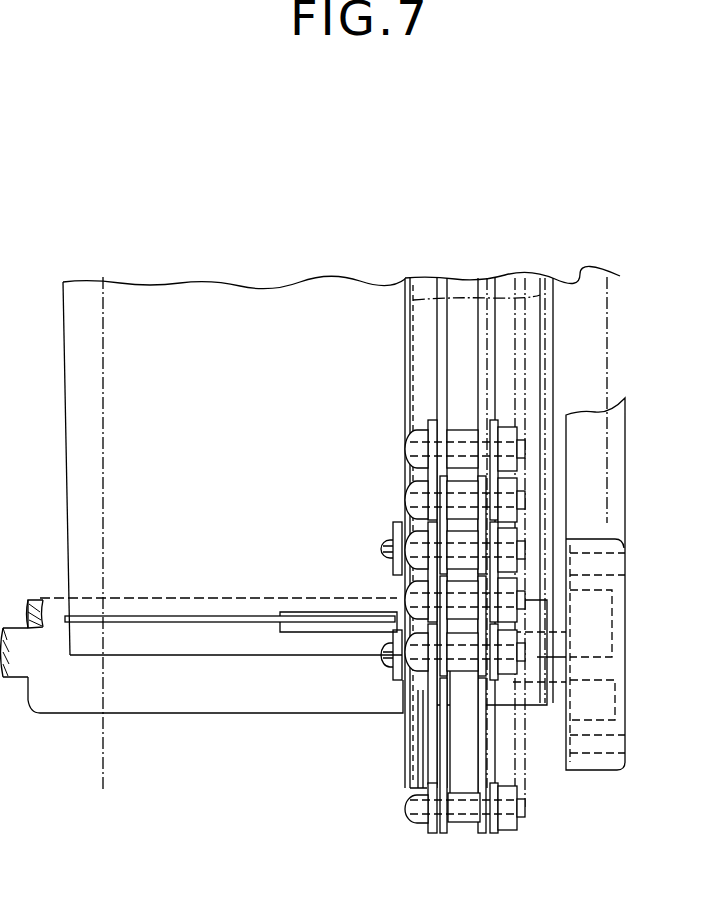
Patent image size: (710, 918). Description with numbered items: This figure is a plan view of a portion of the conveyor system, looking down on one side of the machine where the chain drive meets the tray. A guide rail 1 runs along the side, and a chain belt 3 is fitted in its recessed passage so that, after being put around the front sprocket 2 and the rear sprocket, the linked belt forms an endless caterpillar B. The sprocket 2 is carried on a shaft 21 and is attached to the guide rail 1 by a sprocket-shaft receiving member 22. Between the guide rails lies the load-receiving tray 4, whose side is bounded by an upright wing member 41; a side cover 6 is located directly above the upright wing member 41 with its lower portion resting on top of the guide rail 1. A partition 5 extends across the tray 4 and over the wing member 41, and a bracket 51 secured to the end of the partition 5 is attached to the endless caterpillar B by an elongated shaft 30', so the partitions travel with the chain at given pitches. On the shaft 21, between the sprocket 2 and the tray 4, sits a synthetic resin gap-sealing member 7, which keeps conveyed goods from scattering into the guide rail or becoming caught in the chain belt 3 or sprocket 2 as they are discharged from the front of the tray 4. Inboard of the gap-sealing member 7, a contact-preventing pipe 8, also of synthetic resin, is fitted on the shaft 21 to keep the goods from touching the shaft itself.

The guide rail 1 is at (553, 320).
The sprocket 2 is at (465, 768).
The chain belt 3 is at (455, 437).
The load-receiving tray 4 is at (83, 537).
The partition 5 is at (213, 625).
The side cover 6 is at (523, 297).
The gap-sealing member 7 is at (422, 735).
The contact-preventing pipe 8 is at (173, 707).
The shaft 21 is at (556, 683).
The sprocket-shaft receiving member 22 is at (617, 627).
The elongated shaft 30' is at (380, 606).
The upright wing member 41 is at (405, 397).
The bracket 51 is at (395, 607).
The endless caterpillar B is at (422, 835).